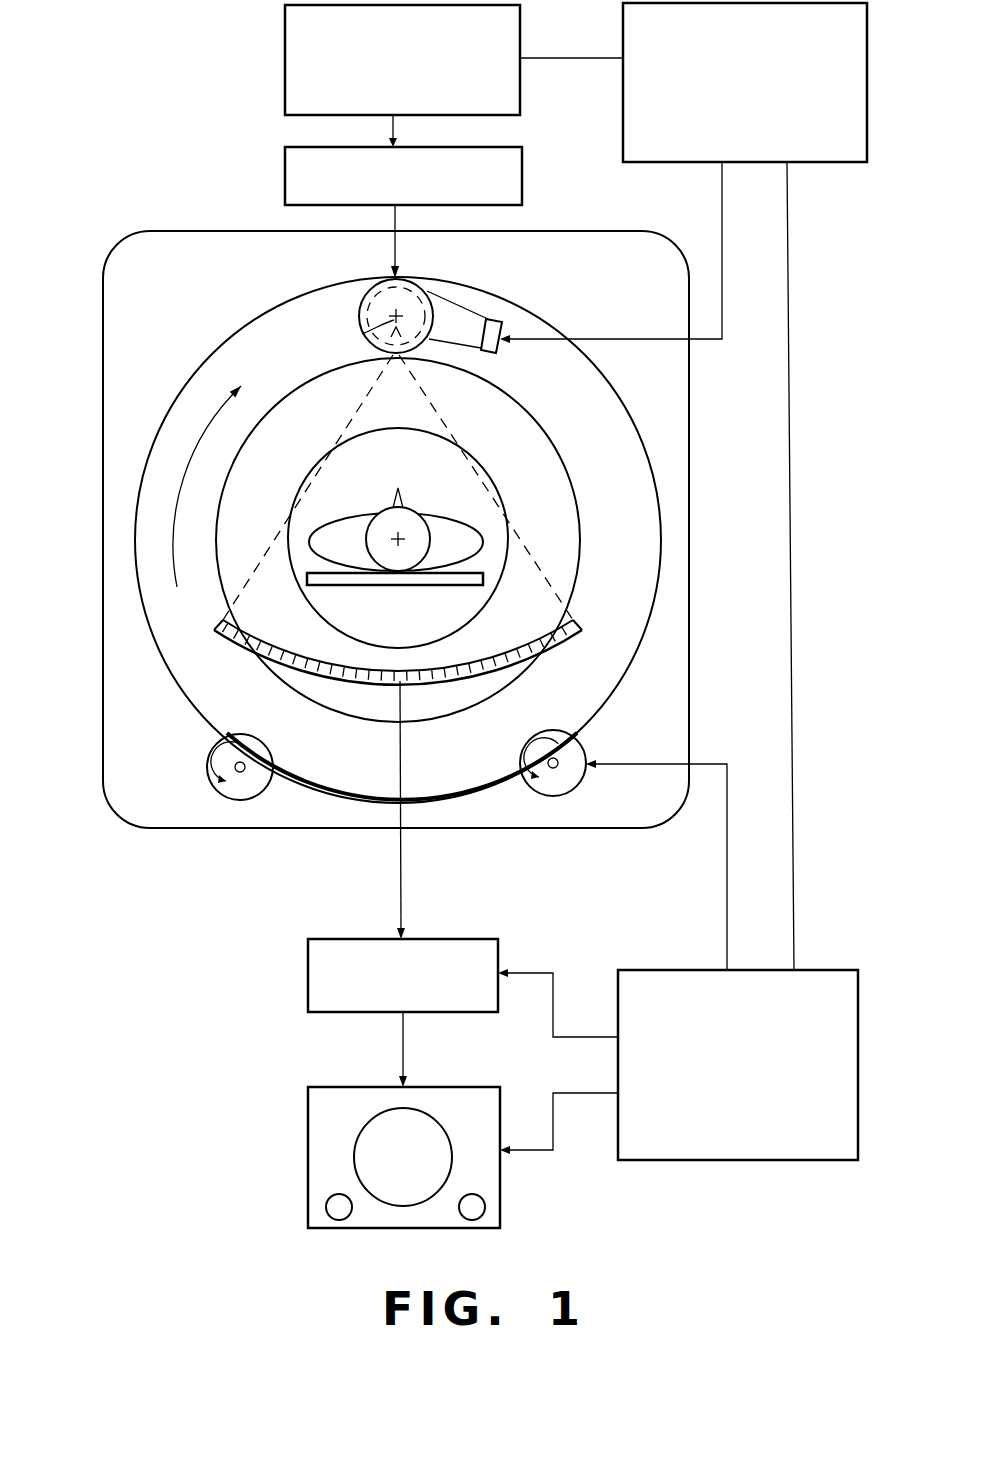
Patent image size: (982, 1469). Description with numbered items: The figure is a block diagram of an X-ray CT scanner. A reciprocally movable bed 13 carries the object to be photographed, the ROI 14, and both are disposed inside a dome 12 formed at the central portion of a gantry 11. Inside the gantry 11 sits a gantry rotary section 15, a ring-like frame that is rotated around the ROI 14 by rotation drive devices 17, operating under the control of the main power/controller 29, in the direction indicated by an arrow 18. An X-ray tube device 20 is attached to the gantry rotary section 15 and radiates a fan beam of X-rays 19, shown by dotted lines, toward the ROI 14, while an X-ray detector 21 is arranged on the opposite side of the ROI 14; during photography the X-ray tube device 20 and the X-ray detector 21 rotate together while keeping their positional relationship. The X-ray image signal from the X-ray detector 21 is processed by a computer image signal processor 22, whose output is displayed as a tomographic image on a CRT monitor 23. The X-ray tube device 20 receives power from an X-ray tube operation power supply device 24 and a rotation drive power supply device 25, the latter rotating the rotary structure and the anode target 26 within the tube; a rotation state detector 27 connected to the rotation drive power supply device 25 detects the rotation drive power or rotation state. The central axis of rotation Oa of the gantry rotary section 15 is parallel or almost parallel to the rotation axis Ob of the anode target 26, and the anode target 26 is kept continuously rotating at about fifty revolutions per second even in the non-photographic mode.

The gantry 11 is at (98, 792).
The dome 12 is at (490, 479).
The bed 13 is at (388, 586).
The ROI 14 is at (476, 538).
The gantry rotary section 15 is at (217, 352).
The rotation drive devices 17 is at (223, 795).
The arrow 18 is at (198, 440).
The fan beam of X-rays 19 is at (444, 421).
The X-ray tube device 20 is at (441, 286).
The X-ray detector 21 is at (438, 680).
The computer image signal processor 22 is at (308, 993).
The CRT monitor 23 is at (308, 1158).
The X-ray tube operation power supply device 24 is at (624, 133).
The rotation drive power supply device 25 is at (286, 53).
The anode target 26 is at (352, 285).
The rotation state detector 27 is at (286, 176).
The main power/controller 29 is at (745, 1162).
The central axis of rotation Oa is at (402, 533).
The rotation axis Ob is at (362, 333).